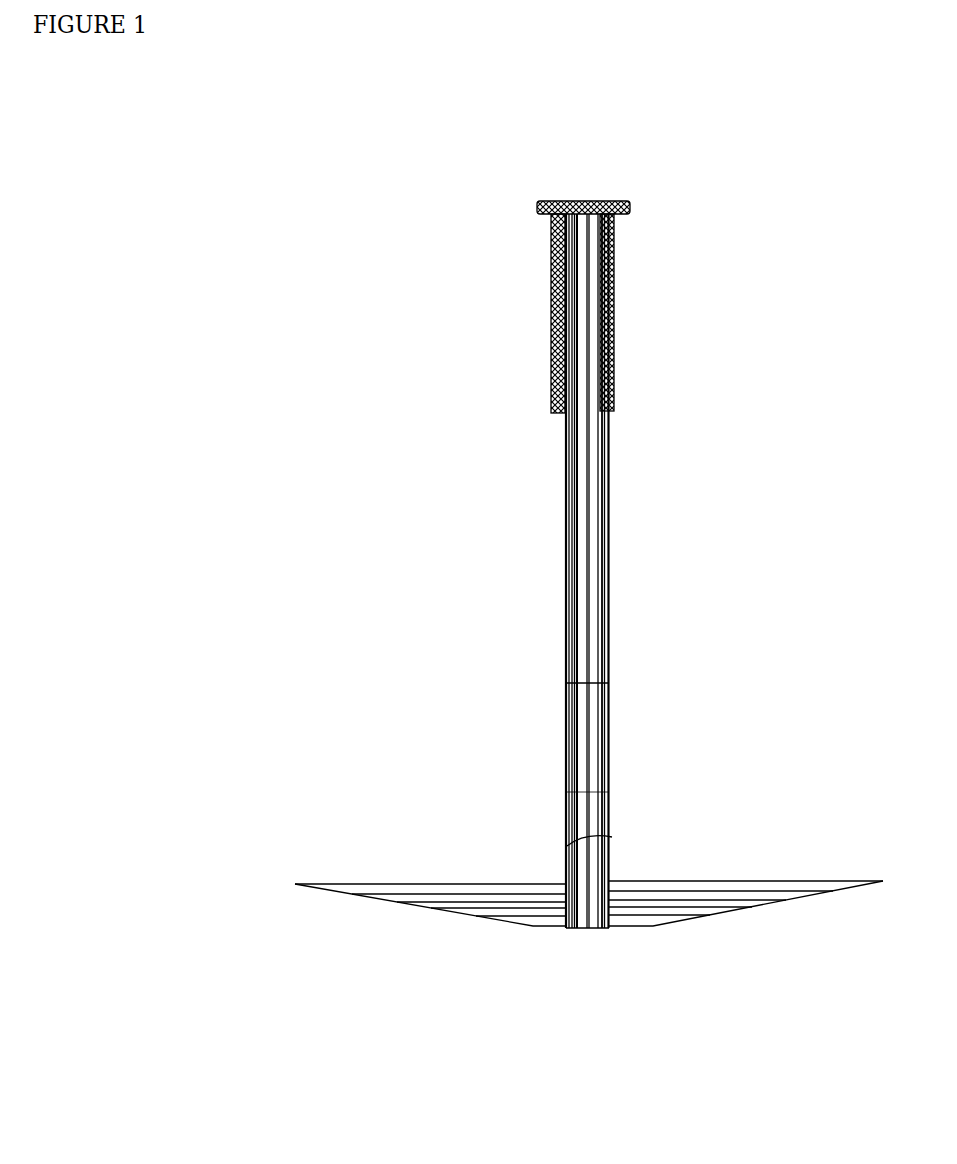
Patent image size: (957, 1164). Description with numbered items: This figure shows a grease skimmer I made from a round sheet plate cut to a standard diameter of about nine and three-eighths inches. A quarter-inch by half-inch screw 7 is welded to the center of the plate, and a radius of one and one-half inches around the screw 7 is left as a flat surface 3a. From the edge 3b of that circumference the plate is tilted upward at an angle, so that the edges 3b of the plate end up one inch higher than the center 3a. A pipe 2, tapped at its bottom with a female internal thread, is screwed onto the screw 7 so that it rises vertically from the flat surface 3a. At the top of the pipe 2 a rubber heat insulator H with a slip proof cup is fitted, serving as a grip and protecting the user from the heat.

The implant/anchor device I is at (516, 581).
The rubber heat insulator H is at (549, 329).
The pipe 2 is at (564, 733).
The flat surface 3a is at (531, 930).
The edge 3b is at (338, 898).
The screw 7 is at (580, 933).